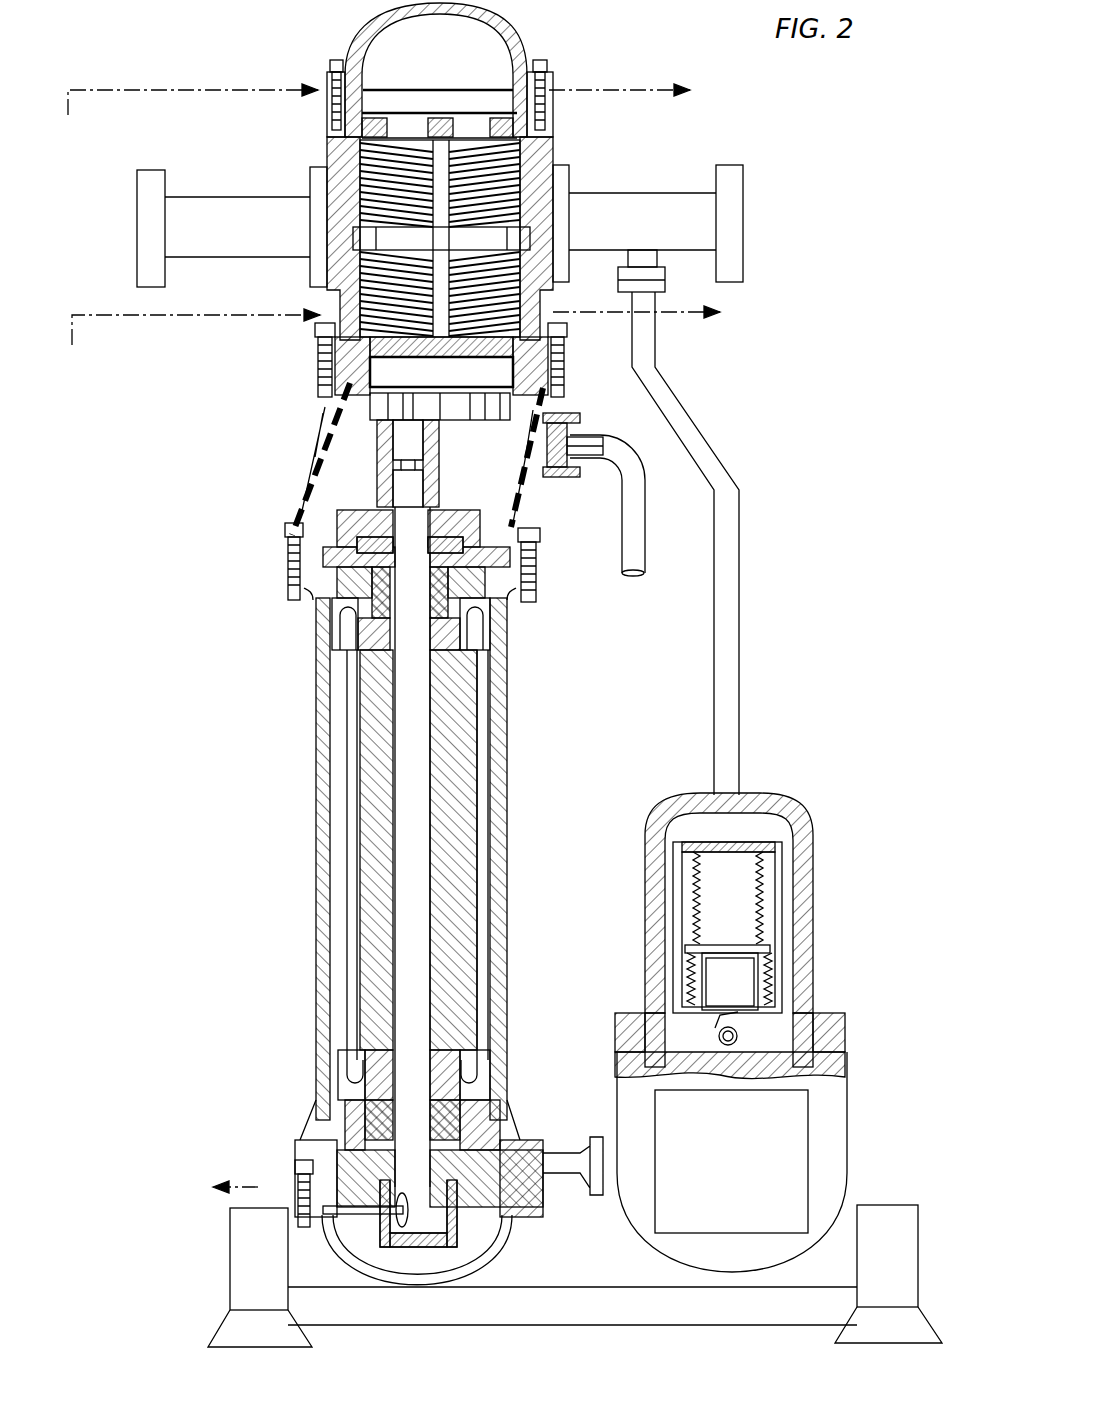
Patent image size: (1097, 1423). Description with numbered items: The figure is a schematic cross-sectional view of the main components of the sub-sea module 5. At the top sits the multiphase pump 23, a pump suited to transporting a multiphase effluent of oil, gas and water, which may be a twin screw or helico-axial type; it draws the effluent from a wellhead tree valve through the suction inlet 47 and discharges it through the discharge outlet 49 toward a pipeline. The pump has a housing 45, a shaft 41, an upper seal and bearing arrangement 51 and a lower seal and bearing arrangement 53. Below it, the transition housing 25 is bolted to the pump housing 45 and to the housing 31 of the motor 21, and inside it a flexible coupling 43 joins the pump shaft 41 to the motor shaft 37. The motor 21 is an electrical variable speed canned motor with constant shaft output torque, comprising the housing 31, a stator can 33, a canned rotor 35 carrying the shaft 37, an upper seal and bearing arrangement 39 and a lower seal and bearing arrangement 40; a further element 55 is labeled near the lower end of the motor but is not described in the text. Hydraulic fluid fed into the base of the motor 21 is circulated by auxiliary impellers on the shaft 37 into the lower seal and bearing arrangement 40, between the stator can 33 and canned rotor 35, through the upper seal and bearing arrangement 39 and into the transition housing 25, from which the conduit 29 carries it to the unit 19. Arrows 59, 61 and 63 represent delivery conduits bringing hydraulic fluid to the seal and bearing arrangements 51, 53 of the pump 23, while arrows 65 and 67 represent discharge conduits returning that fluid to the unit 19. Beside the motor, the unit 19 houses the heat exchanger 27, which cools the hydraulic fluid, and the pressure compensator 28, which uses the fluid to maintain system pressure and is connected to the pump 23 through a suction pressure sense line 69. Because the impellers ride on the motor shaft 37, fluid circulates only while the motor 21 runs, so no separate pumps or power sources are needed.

The sub-sea module 5 is at (792, 392).
The unit 19 is at (848, 846).
The motor 21 is at (300, 871).
The multiphase pump 23 is at (553, 150).
The transition housing 25 is at (320, 458).
The heat exchanger 27 is at (835, 1110).
The pressure compensator 28 is at (770, 890).
The conduit 29 is at (640, 530).
The housing 31 is at (507, 776).
The stator can 33 is at (485, 815).
The canned rotor 35 is at (360, 813).
The shaft 37 is at (425, 858).
The upper seal and bearing arrangement 39 is at (470, 632).
The lower seal and bearing arrangement 40 is at (450, 1116).
The shaft 41 is at (434, 452).
The flexible coupling 43 is at (439, 470).
The housing 45 is at (330, 152).
The suction inlet 47 is at (140, 186).
The discharge outlet 49 is at (745, 184).
The upper seal and bearing arrangement 51 is at (330, 108).
The lower seal and bearing arrangement 53 is at (335, 357).
The lower packing gland 55 is at (345, 1086).
The hydraulic fluid delivery conduit arrow 59 is at (258, 1186).
The hydraulic fluid delivery conduit arrow 61 is at (113, 316).
The hydraulic fluid delivery conduit arrow 63 is at (100, 78).
The hydraulic fluid discharge conduit arrow 65 is at (648, 90).
The hydraulic fluid discharge conduit arrow 67 is at (678, 313).
The suction pressure sense line 69 is at (735, 592).